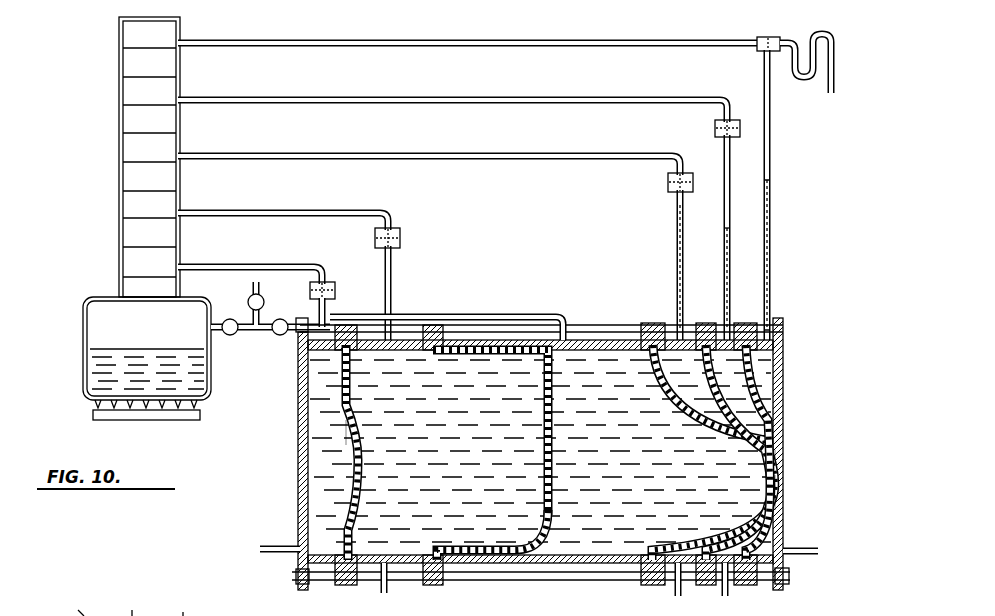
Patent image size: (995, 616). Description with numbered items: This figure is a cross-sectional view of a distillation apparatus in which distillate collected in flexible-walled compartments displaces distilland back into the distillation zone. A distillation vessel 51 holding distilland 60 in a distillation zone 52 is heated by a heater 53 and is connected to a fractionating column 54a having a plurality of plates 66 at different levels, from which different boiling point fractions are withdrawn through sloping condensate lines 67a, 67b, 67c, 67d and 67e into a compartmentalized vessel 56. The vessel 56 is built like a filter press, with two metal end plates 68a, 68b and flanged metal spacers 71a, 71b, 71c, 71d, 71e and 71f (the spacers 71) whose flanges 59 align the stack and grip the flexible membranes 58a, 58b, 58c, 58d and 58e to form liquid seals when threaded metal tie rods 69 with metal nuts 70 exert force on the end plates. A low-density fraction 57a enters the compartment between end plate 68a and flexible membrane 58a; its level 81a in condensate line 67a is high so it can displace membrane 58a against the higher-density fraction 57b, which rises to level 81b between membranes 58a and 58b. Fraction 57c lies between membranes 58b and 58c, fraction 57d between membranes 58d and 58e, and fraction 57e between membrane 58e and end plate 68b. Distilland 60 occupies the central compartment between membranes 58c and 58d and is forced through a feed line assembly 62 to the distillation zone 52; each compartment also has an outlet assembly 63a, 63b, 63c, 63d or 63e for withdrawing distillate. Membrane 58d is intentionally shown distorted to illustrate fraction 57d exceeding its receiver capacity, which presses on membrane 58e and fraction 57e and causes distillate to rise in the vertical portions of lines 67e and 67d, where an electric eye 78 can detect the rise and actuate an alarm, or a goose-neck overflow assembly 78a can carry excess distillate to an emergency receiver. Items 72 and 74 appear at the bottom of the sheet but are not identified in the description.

The distillation vessel 51 is at (84, 313).
The distillation zone 52 is at (100, 349).
The heater 53 is at (93, 414).
The fractionating column 54a is at (119, 184).
The vessel 56 is at (493, 345).
The low-density fraction 57a is at (770, 361).
The higher-density fraction 57b is at (778, 439).
The fraction 57c is at (771, 453).
The fraction 57d is at (488, 433).
The fraction 57e is at (345, 433).
The flexible membrane 58a is at (778, 413).
The flexible membrane 58b is at (776, 479).
The flexible membrane 58c is at (771, 501).
The flexible membrane 58d is at (511, 563).
The flexible membrane 58e is at (343, 398).
The flanges 59 is at (342, 586).
The distilland 60 is at (100, 366).
The feed line assembly 62 is at (256, 335).
The outlet assembly 63a is at (813, 557).
The outlet assembly 63b is at (725, 594).
The outlet assembly 63c is at (676, 589).
The outlet assembly 63d is at (389, 591).
The outlet assembly 63e is at (277, 546).
The plates 66 is at (135, 117).
The condensate line 67a is at (467, 58).
The condensate line 67b is at (452, 112).
The condensate line 67c is at (418, 168).
The condensate line 67d is at (326, 210).
The condensate line 67e is at (286, 264).
The end plate 68a is at (783, 384).
The end plate 68b is at (300, 479).
The threaded metal tie rods 69 is at (583, 328).
The metal nuts 70 is at (296, 578).
The conduit 71 is at (136, 604).
The flanged metal spacer 71a is at (768, 308).
The flanged metal spacer 71b is at (722, 324).
The flanged metal spacer 71c is at (670, 330).
The flanged metal spacer 71d is at (618, 341).
The flanged metal spacer 71e is at (398, 340).
The flanged metal spacer 71f is at (300, 382).
The conduit 72 is at (69, 604).
The conduit 74 is at (181, 604).
The electric eye 78 is at (334, 289).
The goose-neck overflow assembly 78a is at (808, 79).
The level 81a is at (768, 166).
The level 81b is at (725, 229).